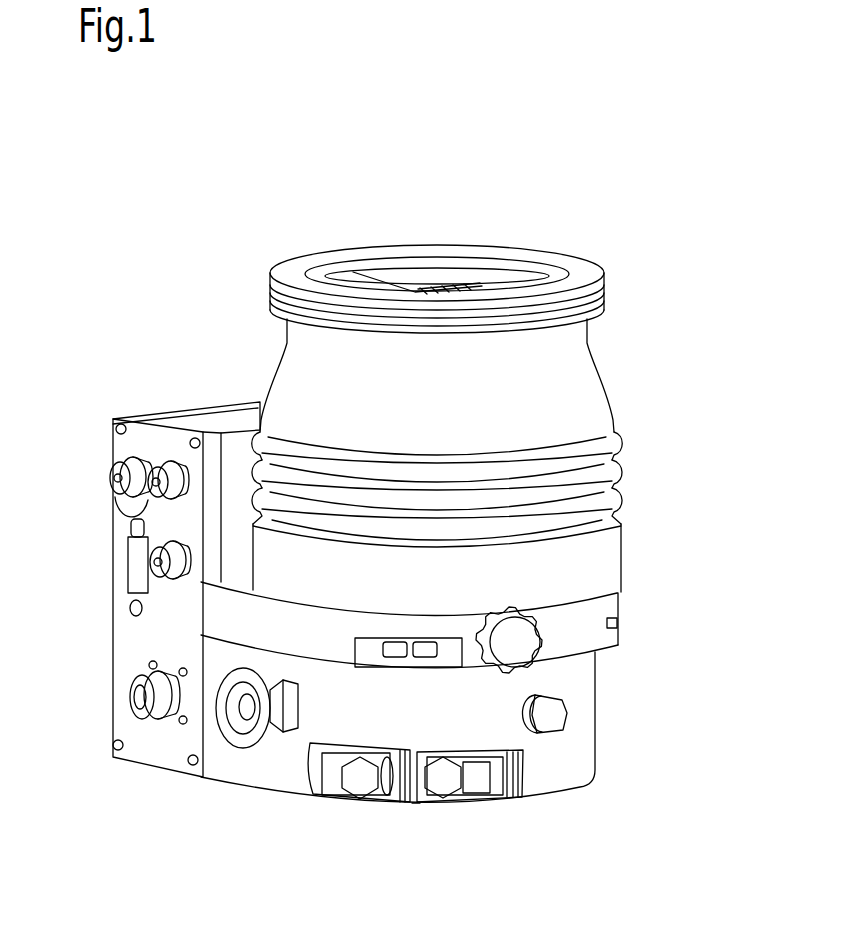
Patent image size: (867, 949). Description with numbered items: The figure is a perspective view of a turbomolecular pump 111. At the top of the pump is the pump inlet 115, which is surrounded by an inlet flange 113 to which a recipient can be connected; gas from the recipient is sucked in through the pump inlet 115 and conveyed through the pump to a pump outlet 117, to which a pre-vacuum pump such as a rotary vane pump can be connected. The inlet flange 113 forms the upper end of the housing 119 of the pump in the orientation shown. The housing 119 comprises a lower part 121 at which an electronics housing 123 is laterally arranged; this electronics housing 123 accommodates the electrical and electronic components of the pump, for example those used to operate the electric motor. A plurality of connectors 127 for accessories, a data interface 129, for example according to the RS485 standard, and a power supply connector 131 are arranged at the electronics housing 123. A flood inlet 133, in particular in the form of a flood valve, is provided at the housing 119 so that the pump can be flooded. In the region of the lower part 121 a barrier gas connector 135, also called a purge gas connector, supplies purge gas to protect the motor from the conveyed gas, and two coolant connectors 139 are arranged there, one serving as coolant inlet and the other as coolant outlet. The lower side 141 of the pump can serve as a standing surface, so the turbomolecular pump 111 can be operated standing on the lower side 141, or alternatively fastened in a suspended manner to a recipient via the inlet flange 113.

The turbomolecular pump 111 is at (602, 96).
The inlet flange 113 is at (588, 273).
The pump inlet 115 is at (440, 270).
The pump outlet 117 is at (240, 740).
The housing 119 is at (615, 423).
The lower part 121 is at (595, 710).
The electronics housing 123 is at (220, 420).
The connectors 127 is at (113, 473).
The data interface 129 is at (127, 575).
The power supply connector 131 is at (127, 702).
The flood inlet 133 is at (528, 639).
The barrier gas connector 135 is at (553, 717).
The coolant connectors 139 is at (353, 797).
The lower side 141 is at (417, 830).